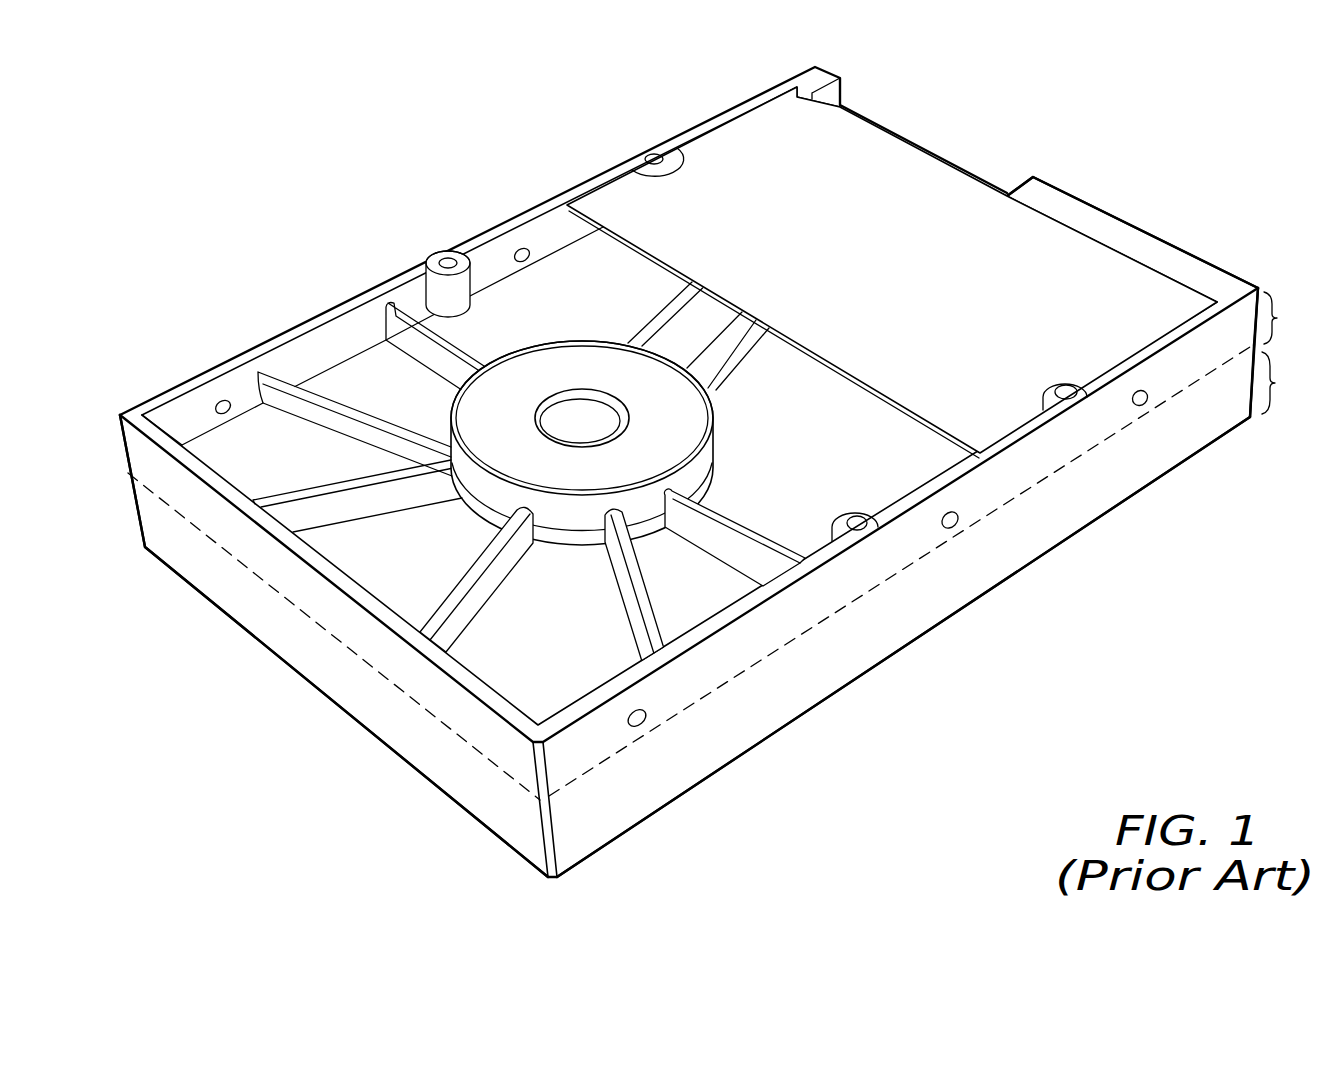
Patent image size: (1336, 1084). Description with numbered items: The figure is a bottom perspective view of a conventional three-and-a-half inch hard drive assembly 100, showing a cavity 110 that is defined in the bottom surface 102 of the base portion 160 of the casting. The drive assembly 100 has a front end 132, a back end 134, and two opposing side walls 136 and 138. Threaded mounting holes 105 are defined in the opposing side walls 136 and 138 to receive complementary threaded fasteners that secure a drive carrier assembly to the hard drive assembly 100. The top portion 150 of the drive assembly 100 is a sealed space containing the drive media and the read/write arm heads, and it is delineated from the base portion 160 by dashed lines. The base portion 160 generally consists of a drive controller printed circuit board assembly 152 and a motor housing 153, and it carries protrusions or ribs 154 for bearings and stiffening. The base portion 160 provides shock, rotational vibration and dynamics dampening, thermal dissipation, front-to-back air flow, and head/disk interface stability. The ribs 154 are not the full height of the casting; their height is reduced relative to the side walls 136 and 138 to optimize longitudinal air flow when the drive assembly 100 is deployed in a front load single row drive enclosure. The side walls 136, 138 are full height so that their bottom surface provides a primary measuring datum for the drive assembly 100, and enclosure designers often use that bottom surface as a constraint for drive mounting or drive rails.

The hard drive assembly 100 is at (200, 240).
The bottom surface 102 is at (375, 358).
The threaded mounting holes 105 is at (222, 400).
The cavity 110 is at (263, 450).
The front end 132 is at (1083, 196).
The back end 134 is at (320, 633).
The side wall 136 is at (778, 640).
The side wall 138 is at (282, 330).
The top portion 150 is at (1286, 381).
The drive controller printed circuit board assembly 152 is at (1097, 280).
The motor housing 153 is at (600, 360).
The ribs 154 is at (460, 353).
The base portion 160 is at (1288, 316).